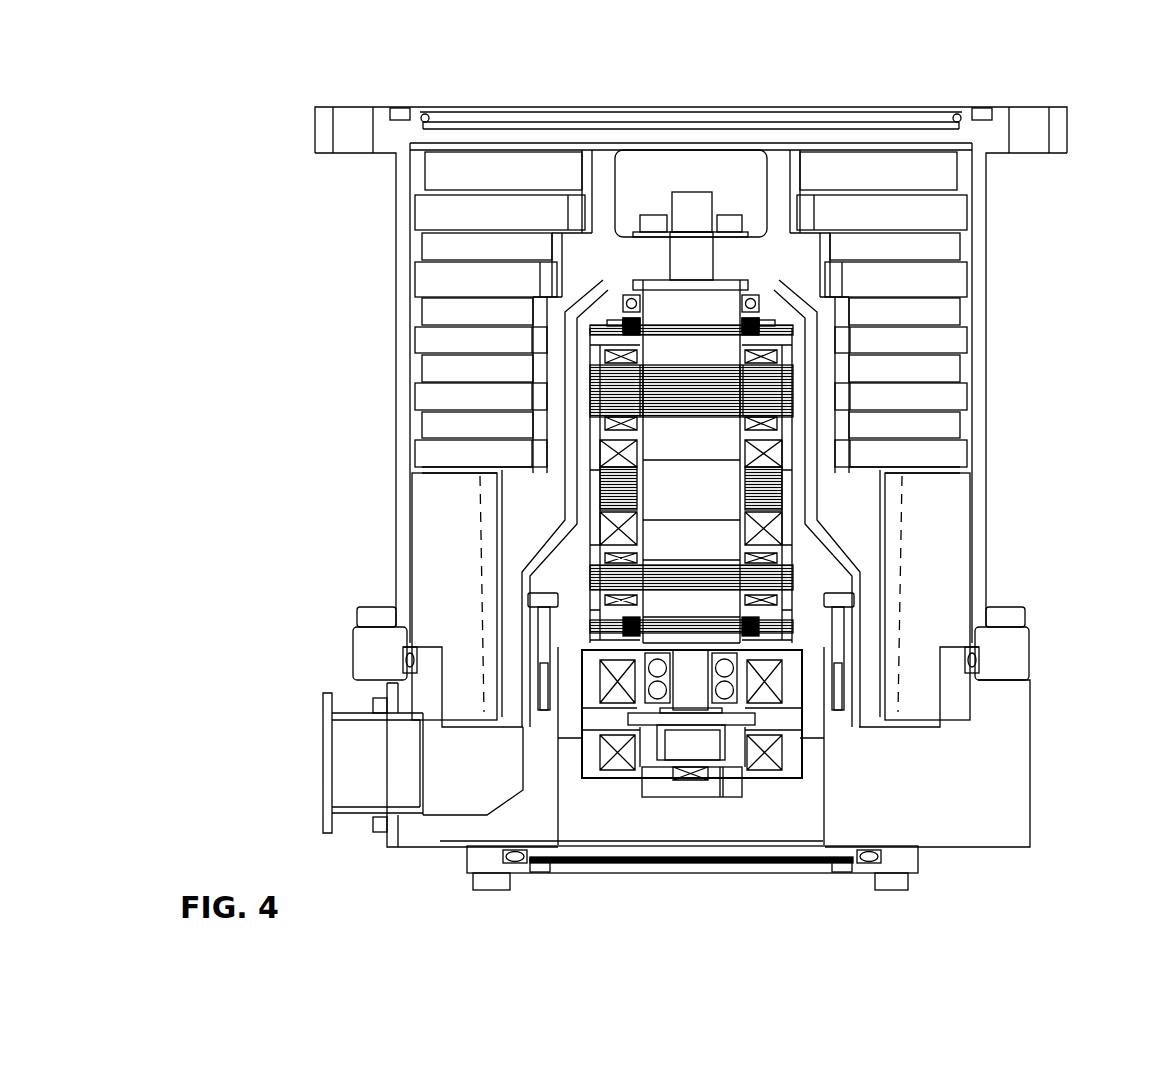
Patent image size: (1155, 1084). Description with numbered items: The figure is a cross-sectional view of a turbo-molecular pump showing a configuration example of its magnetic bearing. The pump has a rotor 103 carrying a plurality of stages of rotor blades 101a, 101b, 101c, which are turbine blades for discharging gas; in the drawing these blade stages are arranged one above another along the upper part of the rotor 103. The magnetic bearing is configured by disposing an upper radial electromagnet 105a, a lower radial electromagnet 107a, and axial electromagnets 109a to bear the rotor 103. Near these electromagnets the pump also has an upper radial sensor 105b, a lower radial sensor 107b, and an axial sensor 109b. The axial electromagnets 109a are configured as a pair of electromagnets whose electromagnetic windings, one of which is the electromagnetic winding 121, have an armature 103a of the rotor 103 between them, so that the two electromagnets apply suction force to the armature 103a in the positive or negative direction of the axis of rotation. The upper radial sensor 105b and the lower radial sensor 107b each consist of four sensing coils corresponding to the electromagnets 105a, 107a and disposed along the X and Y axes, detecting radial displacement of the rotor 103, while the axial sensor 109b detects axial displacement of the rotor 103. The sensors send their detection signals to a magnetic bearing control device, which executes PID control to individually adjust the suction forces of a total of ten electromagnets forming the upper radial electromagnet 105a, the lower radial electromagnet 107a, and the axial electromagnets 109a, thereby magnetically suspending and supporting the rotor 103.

The rotor 103 is at (693, 190).
The rotor blade 101a is at (950, 170).
The rotor blade 101b is at (950, 245).
The rotor blade 101c is at (950, 312).
The upper radial electromagnet 105a is at (795, 395).
The upper radial sensor 105b is at (795, 330).
The electromagnetic winding 121 is at (780, 490).
The lower radial electromagnet 107a is at (795, 578).
The lower radial sensor 107b is at (795, 628).
The armature 103a is at (640, 718).
The axial sensor 109b is at (690, 797).
The axial electromagnet 109a is at (790, 680).